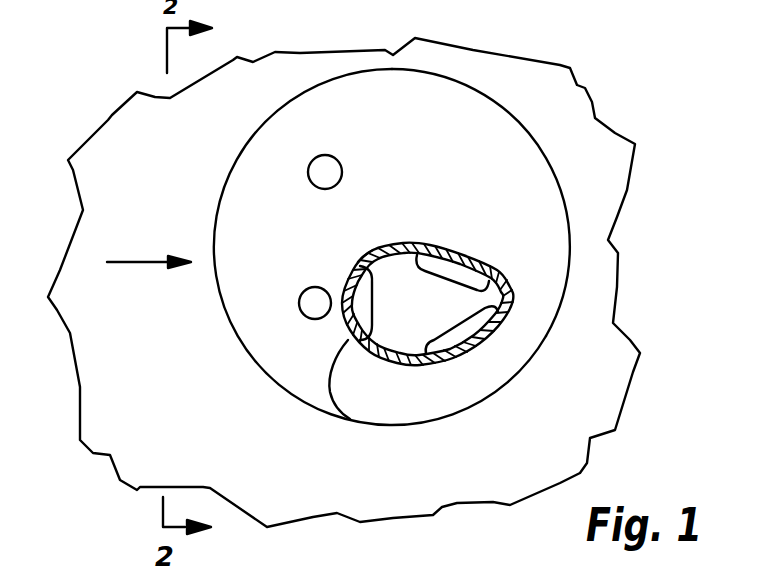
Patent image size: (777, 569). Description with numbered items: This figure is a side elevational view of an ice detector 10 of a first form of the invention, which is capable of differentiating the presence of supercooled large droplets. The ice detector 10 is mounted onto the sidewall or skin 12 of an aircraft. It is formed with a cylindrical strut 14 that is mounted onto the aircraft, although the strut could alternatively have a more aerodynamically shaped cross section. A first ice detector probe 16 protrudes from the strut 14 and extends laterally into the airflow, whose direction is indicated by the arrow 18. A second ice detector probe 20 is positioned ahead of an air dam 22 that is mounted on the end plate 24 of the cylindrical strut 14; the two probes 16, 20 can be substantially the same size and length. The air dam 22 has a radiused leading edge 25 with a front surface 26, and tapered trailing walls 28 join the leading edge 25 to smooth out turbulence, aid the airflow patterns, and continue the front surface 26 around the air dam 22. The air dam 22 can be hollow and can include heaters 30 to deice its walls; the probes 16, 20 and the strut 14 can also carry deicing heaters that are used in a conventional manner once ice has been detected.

The ice detector 10 is at (350, 263).
The skin 12 is at (612, 397).
The cylindrical strut 14 is at (547, 336).
The first ice detector probe 16 is at (324, 156).
The arrow 18 is at (128, 263).
The second ice detector probe 20 is at (299, 303).
The air dam 22 is at (434, 236).
The end plate 24 is at (267, 360).
The radiused leading edge 25 is at (372, 263).
The front surface 26 is at (345, 414).
The tapered trailing walls 28 is at (458, 250).
The heaters 30 is at (470, 260).